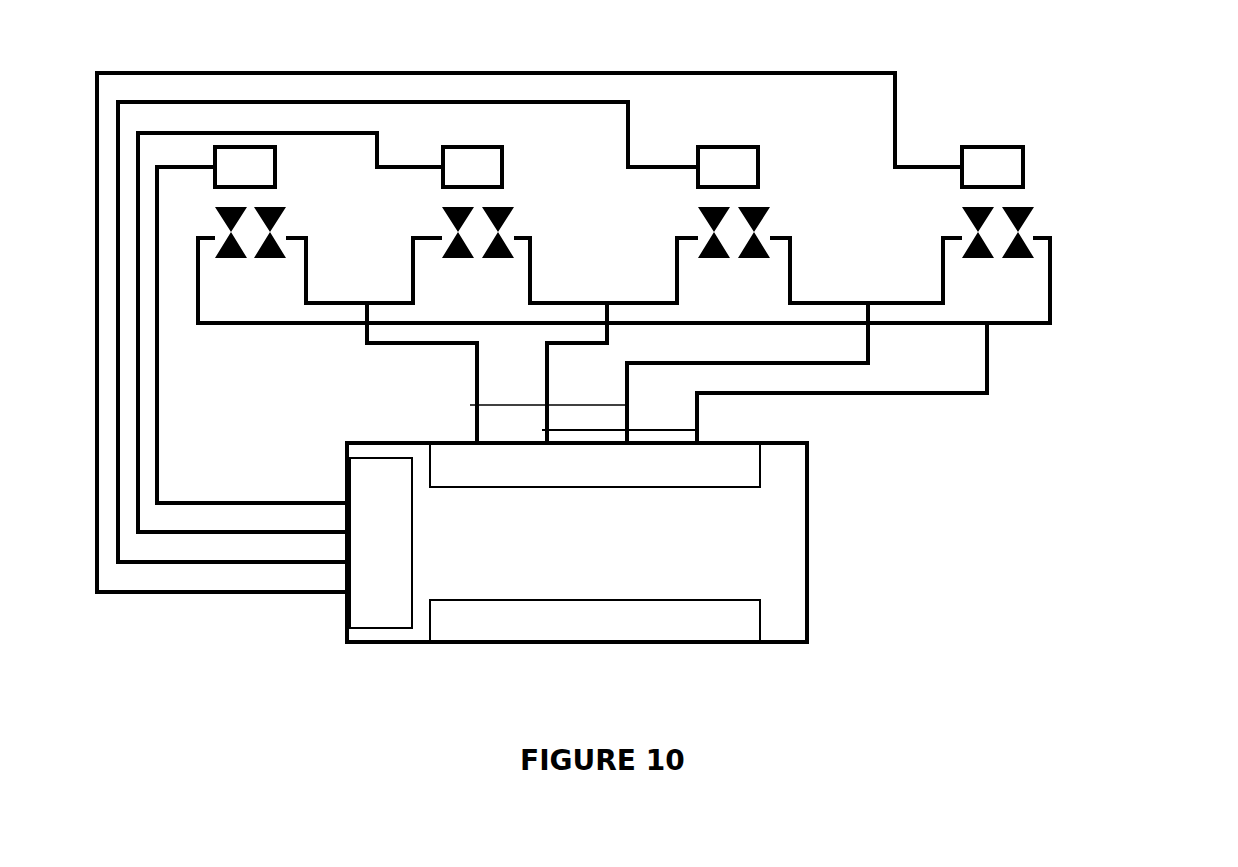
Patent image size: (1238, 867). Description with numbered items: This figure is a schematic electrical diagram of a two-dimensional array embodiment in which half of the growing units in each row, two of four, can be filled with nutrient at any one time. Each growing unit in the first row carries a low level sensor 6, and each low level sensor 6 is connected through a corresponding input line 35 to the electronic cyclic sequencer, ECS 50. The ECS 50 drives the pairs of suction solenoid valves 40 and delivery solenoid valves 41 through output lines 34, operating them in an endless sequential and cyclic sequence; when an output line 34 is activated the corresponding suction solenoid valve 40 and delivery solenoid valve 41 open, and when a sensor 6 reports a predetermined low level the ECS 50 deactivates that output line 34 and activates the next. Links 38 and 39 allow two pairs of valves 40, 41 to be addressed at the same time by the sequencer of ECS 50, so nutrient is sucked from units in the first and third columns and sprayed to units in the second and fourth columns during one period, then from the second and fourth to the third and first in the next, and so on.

The low level sensor 6 is at (253, 147).
The output line 34 is at (545, 358).
The input line 35 is at (127, 594).
The link 38 is at (600, 403).
The link 39 is at (647, 428).
The suction solenoid valve 40 is at (270, 258).
The delivery solenoid valve 41 is at (232, 258).
The electronic cyclic sequencer (ECS) 50 is at (800, 493).